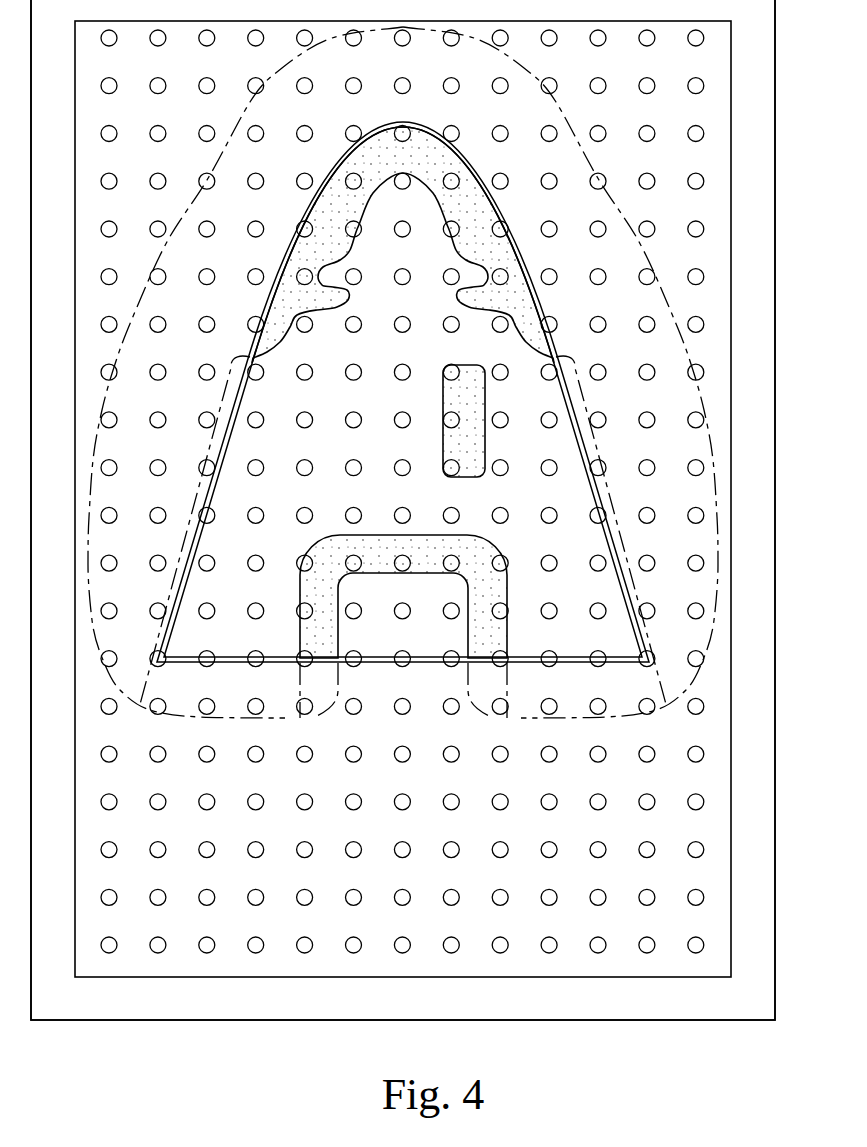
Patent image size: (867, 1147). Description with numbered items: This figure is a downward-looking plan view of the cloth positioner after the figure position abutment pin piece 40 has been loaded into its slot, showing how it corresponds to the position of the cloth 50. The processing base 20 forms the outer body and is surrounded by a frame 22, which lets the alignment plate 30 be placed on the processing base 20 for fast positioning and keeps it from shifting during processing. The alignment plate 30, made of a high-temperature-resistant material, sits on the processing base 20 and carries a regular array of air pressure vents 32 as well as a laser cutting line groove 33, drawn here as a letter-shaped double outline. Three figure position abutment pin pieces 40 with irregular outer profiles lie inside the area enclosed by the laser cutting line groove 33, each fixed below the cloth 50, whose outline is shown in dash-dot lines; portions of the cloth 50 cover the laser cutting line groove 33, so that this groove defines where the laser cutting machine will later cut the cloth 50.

The processing base 20 is at (529, 1028).
The frame 22 is at (637, 1008).
The alignment plate 30 is at (225, 983).
The air pressure vents 32 is at (260, 948).
The laser cutting line groove 33 is at (240, 400).
The figure position abutment pin piece 40 is at (492, 227).
The cloth 50 is at (682, 302).